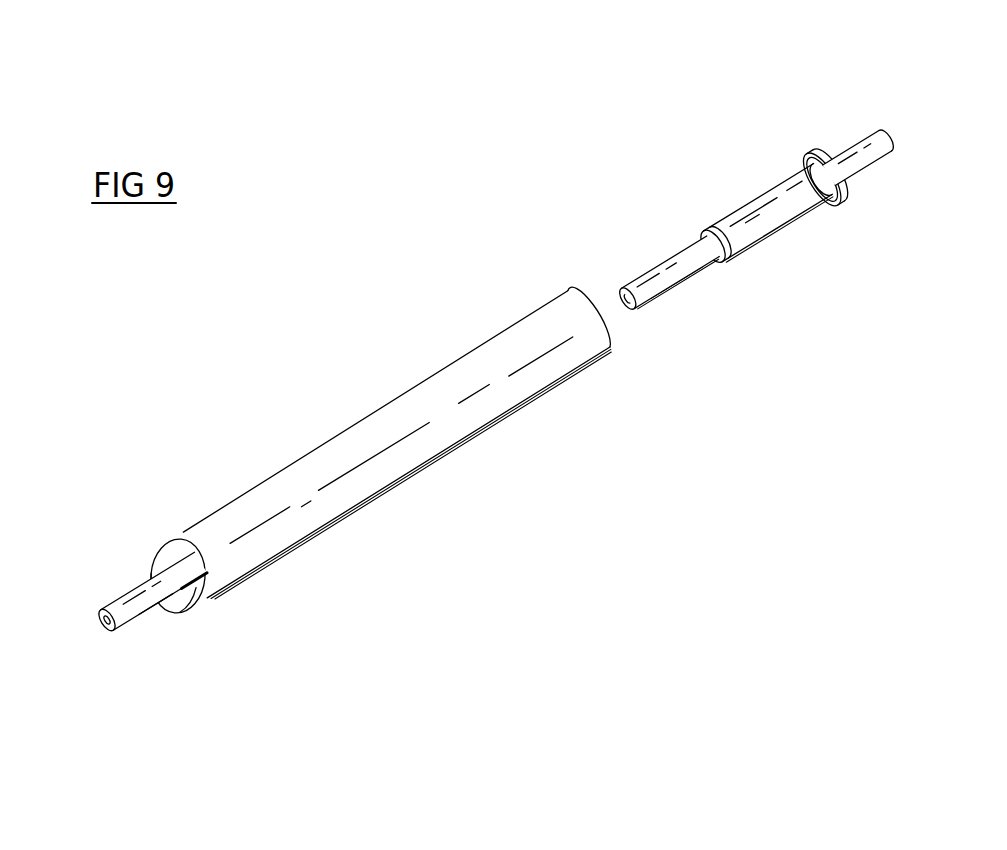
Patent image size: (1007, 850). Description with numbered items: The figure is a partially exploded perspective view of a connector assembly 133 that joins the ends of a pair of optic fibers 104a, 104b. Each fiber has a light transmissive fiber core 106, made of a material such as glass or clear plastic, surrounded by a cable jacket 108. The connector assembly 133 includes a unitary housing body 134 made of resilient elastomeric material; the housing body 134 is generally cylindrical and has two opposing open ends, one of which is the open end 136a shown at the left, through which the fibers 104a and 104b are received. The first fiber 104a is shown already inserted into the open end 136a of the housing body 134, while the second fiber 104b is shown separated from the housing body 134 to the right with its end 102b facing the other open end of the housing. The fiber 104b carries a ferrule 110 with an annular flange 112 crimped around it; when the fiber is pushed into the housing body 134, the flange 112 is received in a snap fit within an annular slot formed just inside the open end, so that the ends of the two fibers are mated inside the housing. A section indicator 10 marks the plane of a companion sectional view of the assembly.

The section line for FIG. 10 is at (100, 622).
The end of optic fiber 102b is at (640, 307).
The optic fiber 104a is at (116, 589).
The optic fiber 104b is at (849, 133).
The fiber core 106 is at (110, 632).
The cable jacket 108 is at (160, 613).
The ferrule 110 is at (783, 205).
The annular flange 112 is at (200, 605).
The connector assembly 133 is at (356, 345).
The housing body 134 is at (449, 360).
The open end 136a is at (161, 554).